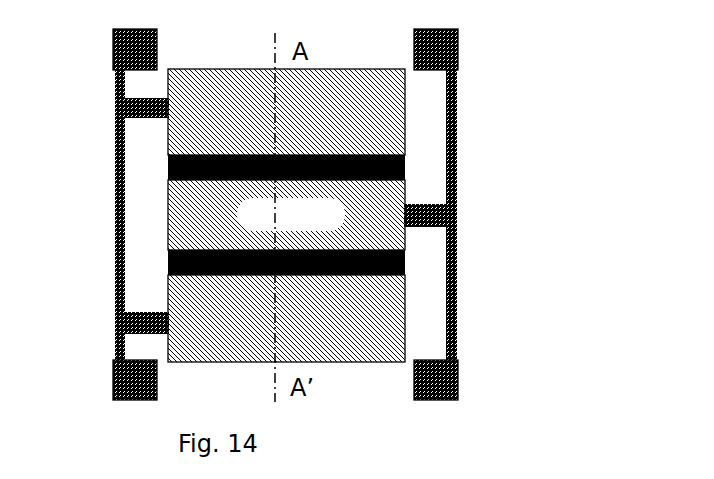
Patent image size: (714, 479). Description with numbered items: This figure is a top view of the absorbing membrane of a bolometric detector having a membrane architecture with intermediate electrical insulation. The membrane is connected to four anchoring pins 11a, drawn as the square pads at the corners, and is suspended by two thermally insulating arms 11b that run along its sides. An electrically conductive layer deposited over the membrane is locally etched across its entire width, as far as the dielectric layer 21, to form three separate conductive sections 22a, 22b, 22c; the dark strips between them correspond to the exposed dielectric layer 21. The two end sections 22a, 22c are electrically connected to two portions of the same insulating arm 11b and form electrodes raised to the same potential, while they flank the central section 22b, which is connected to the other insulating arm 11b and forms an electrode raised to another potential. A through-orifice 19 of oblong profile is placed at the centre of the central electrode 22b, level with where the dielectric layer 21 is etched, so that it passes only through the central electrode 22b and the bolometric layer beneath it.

The anchoring pins 11a is at (458, 48).
The thermally insulating arms 11b is at (457, 213).
The through-orifice 19 is at (240, 213).
The dielectric layer 21 is at (412, 167).
The end conductive section 22a is at (405, 112).
The central conductive section 22b is at (405, 215).
The end conductive section 22c is at (405, 318).